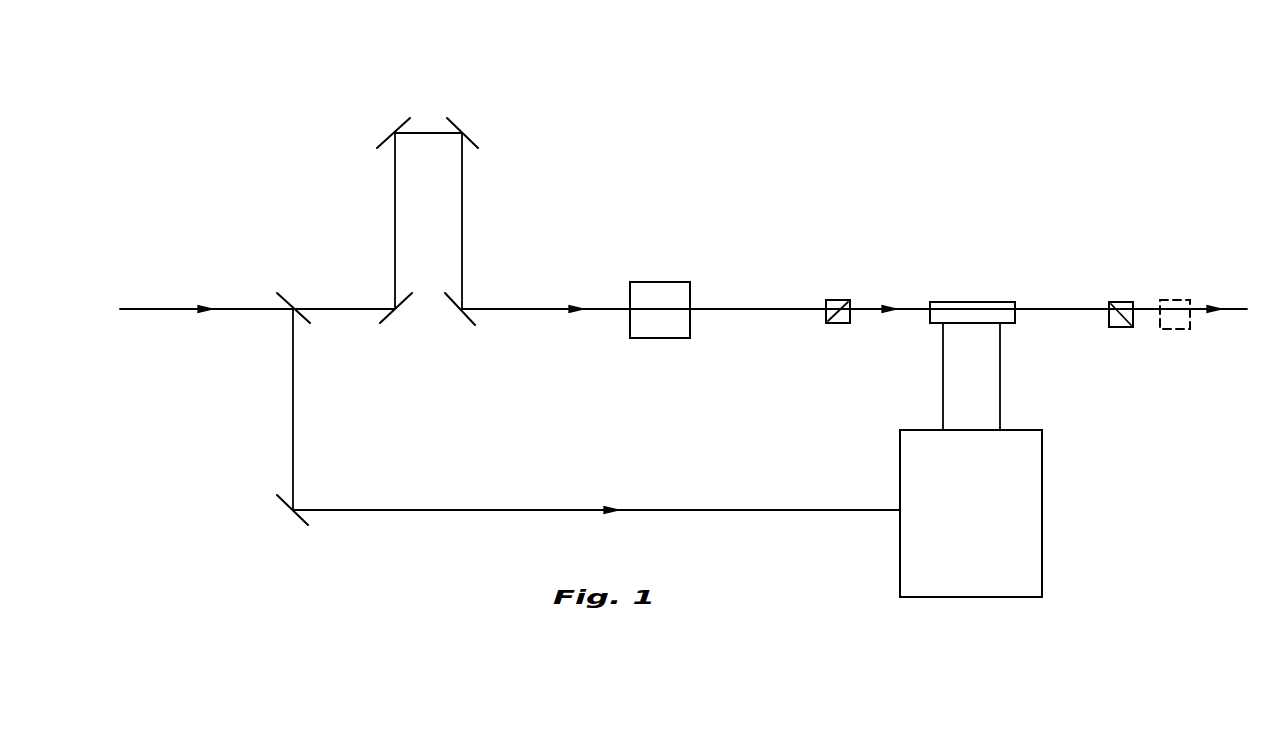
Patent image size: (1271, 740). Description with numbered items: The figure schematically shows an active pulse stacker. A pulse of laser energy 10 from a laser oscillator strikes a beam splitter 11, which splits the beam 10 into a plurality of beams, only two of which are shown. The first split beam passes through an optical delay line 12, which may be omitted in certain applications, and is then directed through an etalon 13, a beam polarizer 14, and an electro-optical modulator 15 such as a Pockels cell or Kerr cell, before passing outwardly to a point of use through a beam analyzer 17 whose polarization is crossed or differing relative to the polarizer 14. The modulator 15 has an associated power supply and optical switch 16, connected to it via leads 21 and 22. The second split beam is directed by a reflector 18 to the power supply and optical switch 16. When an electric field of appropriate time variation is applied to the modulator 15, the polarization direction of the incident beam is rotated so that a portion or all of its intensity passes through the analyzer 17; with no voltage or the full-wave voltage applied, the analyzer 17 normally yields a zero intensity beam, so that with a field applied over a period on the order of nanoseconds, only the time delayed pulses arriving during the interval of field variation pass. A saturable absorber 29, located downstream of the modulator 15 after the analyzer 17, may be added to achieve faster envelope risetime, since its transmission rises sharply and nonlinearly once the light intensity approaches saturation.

The pulse of laser energy 10 is at (155, 309).
The beam splitter 11 is at (289, 290).
The optical delay line 12 is at (482, 121).
The etalon 13 is at (641, 281).
The beam polarizer 14 is at (831, 298).
The electro-optical modulator 15 is at (964, 301).
The power supply and optical switch 16 is at (984, 577).
The beam analyzer 17 is at (1115, 300).
The reflector 18 is at (292, 514).
The lead 21 is at (943, 383).
The lead 22 is at (1000, 383).
The saturable absorber 29 is at (1167, 331).